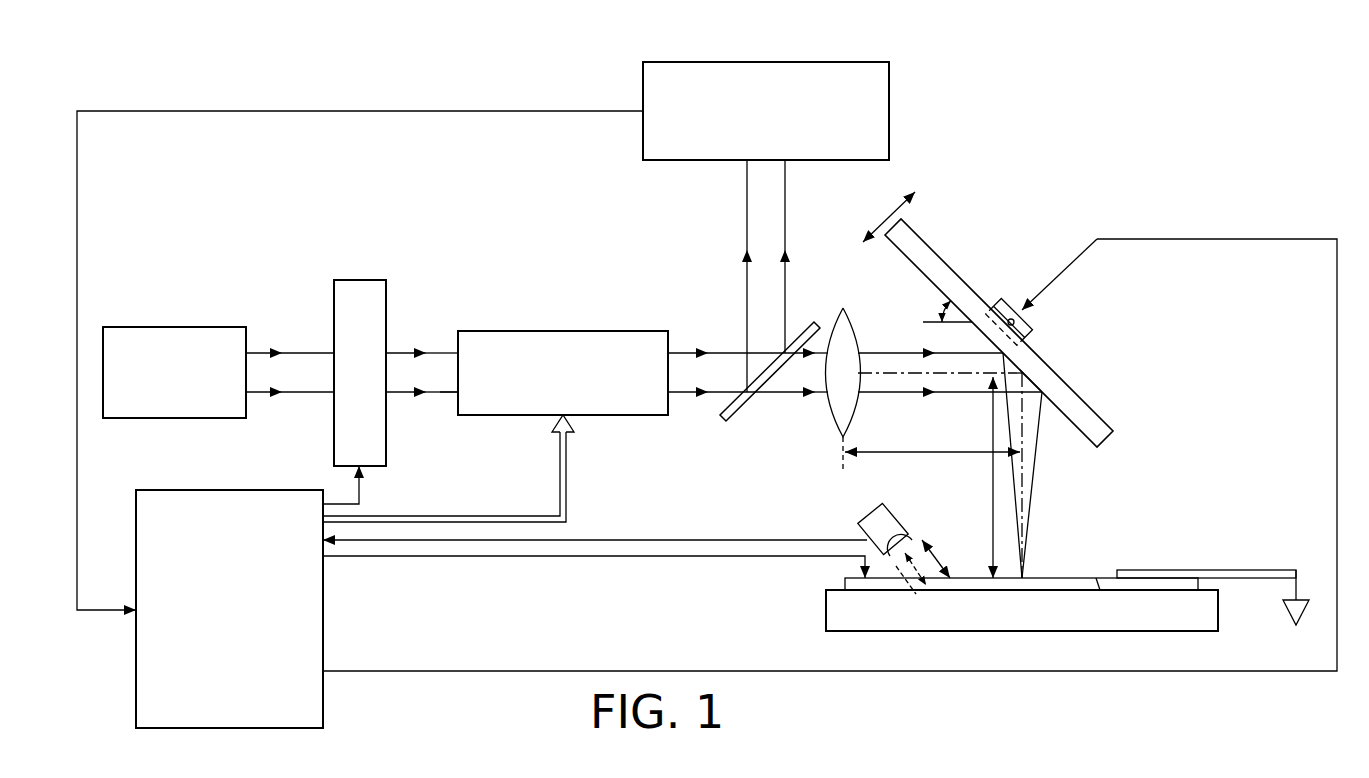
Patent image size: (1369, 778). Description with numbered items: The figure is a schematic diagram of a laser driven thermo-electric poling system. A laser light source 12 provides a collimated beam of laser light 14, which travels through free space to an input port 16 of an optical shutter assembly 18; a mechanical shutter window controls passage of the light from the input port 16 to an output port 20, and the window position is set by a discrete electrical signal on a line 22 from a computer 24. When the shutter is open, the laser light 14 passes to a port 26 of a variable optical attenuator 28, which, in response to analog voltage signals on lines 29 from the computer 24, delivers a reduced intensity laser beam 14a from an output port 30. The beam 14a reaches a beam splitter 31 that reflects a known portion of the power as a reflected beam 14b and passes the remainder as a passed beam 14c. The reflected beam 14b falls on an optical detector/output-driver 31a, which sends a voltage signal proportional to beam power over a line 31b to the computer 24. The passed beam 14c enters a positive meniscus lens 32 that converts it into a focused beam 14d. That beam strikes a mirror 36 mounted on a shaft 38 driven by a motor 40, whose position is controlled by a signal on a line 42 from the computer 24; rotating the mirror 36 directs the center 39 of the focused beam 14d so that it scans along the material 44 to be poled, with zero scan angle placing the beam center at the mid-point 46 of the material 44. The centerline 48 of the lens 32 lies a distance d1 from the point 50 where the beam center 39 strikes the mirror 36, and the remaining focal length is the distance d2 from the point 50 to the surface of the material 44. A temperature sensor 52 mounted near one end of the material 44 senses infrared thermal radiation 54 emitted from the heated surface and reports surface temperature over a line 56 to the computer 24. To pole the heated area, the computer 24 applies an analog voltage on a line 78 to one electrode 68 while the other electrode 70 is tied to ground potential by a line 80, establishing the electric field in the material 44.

The laser light source 12 is at (140, 327).
The laser light beam 14 is at (305, 394).
The reduced intensity laser beam 14a is at (683, 394).
The reflected beam 14b is at (787, 222).
The passed beam 14c is at (788, 394).
The focused beam 14d is at (888, 394).
The input port 16 is at (334, 353).
The optical shutter assembly 18 is at (352, 280).
The output port 20 is at (388, 352).
The line 22 is at (359, 498).
The computer 24 is at (186, 490).
The port 26 is at (456, 394).
The variable optical attenuator 28 is at (500, 331).
The lines 29 is at (566, 494).
The output port 30 is at (670, 350).
The beam splitter 31 is at (735, 420).
The optical detector/output-driver 31a is at (704, 62).
The line 31b is at (515, 111).
The positive meniscus lens 32 is at (836, 322).
The mirror 36 is at (952, 270).
The shaft 38 is at (1004, 301).
The center of the focused laser beam 39 is at (1020, 414).
The motor 40 is at (1033, 326).
The line 42 is at (1153, 239).
The material to be poled 44 is at (826, 616).
The mid-point 46 is at (1028, 580).
The centerline of the lens 48 is at (836, 462).
The point 50 is at (1038, 364).
The temperature sensor 52 is at (862, 520).
The infrared thermal radiation 54 is at (918, 590).
The line 56 is at (680, 541).
The electrode 68 is at (972, 586).
The electrode 70 is at (1098, 582).
The line 78 is at (552, 558).
The line 80 is at (1172, 570).
The distance d1 is at (930, 454).
The distance d2 is at (992, 508).